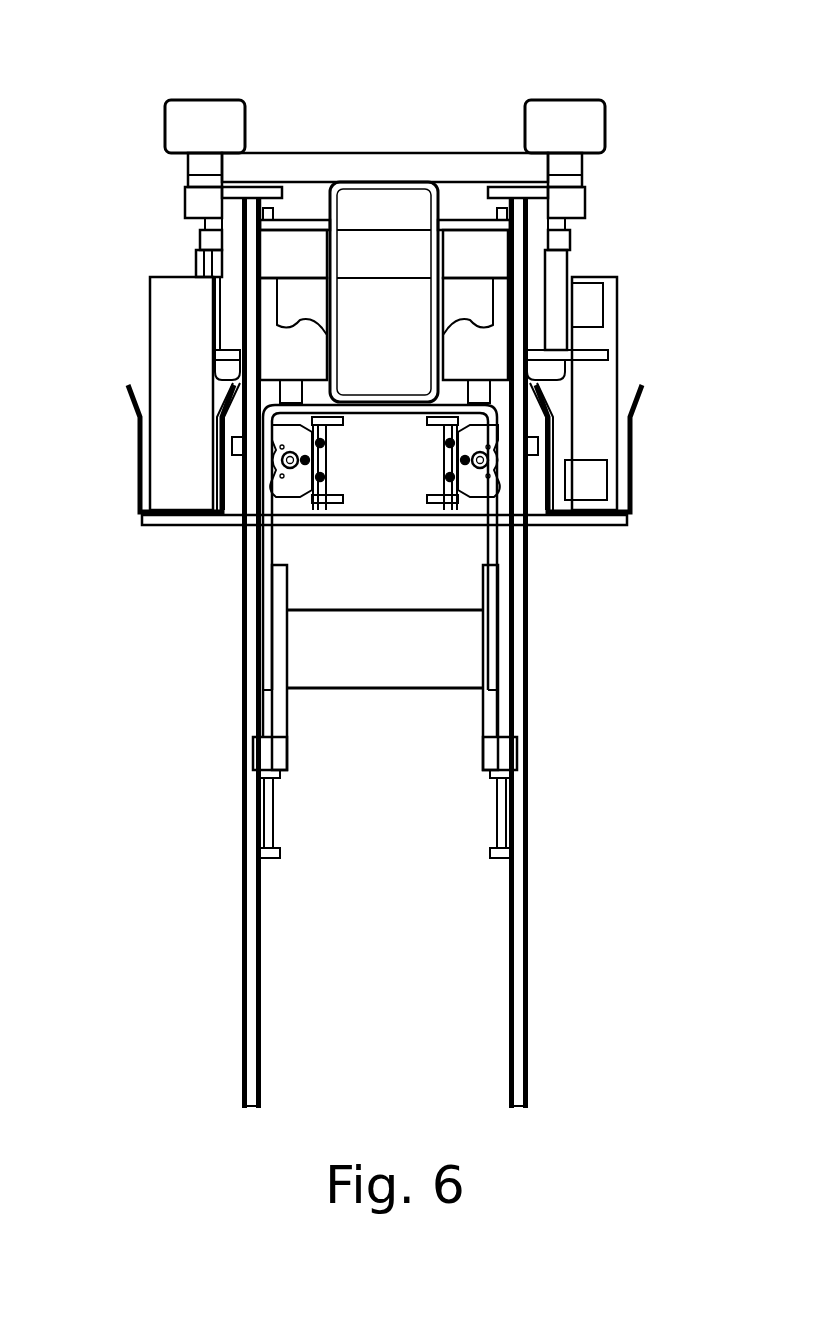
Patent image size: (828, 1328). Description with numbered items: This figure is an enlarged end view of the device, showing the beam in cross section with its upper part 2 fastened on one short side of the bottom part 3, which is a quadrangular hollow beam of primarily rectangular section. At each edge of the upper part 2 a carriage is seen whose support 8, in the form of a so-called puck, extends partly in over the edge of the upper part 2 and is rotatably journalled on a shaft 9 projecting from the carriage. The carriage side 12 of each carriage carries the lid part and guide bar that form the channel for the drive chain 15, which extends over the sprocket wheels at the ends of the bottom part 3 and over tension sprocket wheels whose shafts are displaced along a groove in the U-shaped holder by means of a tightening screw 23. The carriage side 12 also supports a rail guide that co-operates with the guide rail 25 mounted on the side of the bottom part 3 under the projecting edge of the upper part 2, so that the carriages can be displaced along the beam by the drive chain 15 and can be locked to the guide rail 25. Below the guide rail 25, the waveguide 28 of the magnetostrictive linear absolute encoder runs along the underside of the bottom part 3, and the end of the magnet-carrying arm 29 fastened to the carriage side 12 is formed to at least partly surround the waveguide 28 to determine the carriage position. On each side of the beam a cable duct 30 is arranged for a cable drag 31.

The upper part 2 is at (383, 172).
The bottom part 3 is at (370, 393).
The support 8 is at (197, 128).
The shaft 9 is at (203, 165).
The carriage side 12 is at (233, 228).
The drive chain 15 is at (250, 932).
The tightening screw 23 is at (268, 815).
The guide rail 25 is at (472, 303).
The waveguide 28 is at (326, 470).
The magnet-carrying arm 29 is at (292, 480).
The cable duct 30 is at (138, 460).
The cable drag 31 is at (172, 340).